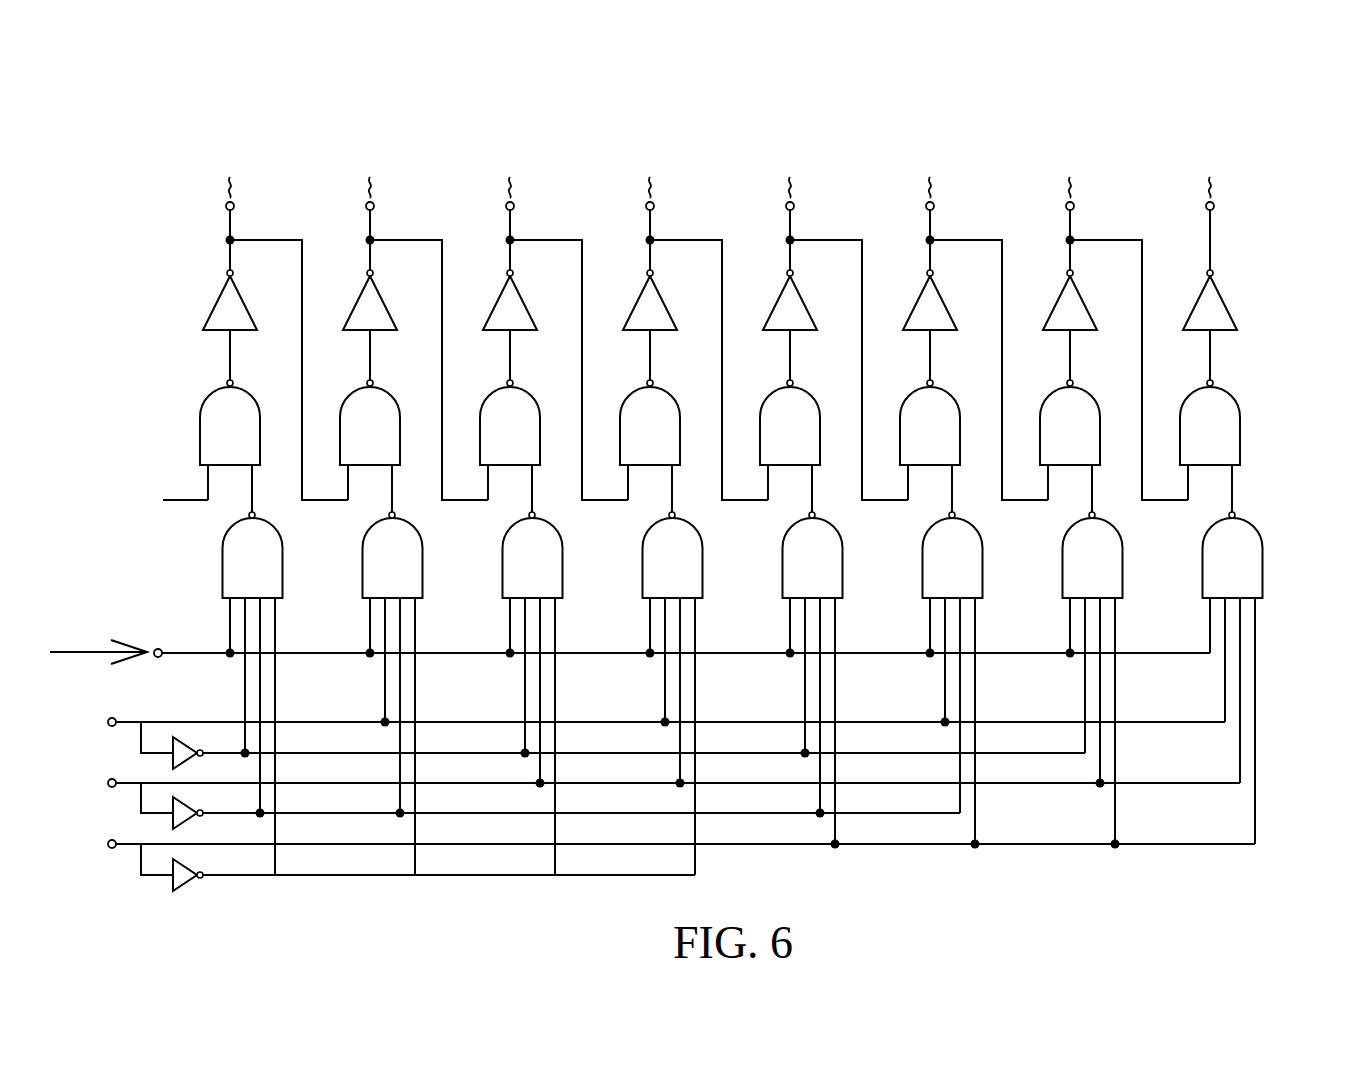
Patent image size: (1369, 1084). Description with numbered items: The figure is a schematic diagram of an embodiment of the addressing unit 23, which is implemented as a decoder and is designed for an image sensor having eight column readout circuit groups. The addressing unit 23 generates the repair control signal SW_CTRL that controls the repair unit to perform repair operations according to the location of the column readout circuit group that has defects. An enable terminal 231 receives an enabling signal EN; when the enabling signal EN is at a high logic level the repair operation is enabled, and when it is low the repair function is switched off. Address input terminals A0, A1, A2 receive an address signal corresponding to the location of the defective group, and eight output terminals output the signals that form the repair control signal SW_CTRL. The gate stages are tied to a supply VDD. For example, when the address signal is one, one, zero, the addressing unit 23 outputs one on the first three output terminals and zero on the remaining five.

The addressing unit 23 is at (1250, 136).
The enable terminal 231 is at (158, 648).
The supply voltage VDD is at (151, 498).
The enabling signal EN is at (98, 643).
The address input terminal A0 is at (100, 720).
The address input terminal A1 is at (100, 780).
The address input terminal A2 is at (100, 842).